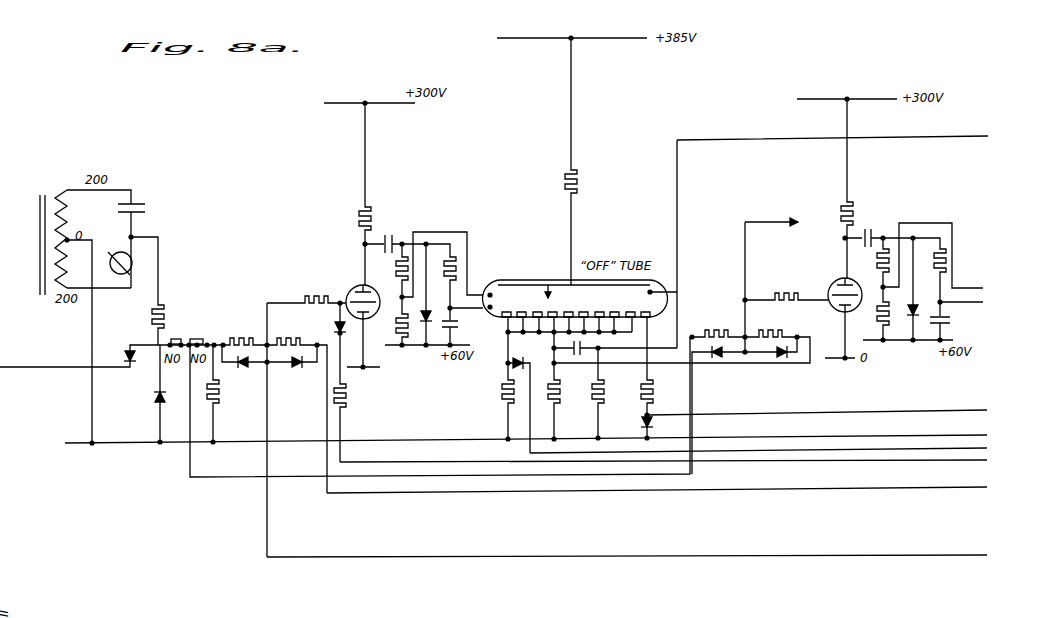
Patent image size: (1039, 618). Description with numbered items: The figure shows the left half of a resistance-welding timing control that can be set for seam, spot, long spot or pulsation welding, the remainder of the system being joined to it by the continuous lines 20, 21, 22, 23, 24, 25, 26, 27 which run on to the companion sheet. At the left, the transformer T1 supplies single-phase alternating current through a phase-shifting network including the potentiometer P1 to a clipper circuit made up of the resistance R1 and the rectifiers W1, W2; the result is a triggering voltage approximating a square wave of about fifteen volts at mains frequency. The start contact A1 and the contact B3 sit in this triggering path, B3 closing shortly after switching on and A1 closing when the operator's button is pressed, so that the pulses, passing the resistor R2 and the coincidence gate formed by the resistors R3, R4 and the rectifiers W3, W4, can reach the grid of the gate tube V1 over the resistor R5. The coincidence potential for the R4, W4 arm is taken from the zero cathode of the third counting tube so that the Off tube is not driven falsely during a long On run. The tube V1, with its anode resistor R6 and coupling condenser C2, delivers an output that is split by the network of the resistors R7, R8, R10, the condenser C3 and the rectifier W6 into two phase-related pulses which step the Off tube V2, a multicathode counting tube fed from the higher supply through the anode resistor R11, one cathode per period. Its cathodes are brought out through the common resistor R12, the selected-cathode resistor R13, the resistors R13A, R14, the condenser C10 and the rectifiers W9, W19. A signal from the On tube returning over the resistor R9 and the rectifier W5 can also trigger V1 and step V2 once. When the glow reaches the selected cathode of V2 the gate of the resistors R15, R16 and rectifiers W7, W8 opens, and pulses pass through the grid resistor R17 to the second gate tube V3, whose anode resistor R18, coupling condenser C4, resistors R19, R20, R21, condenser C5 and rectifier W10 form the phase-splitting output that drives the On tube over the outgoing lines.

The transformer T1 is at (89, 234).
The phase-shifting potentiometer P1 is at (118, 253).
The clipper resistance R1 is at (150, 322).
The resistor R2 is at (221, 394).
The resistor R3 is at (248, 330).
The coincidence circuit resistor R4 is at (290, 338).
The resistor R5 is at (312, 296).
The anode resistor R6 is at (374, 222).
The resistor R7 is at (396, 272).
The resistor R8 is at (396, 329).
The resistor R9 is at (348, 398).
The resistor R10 is at (458, 266).
The anode resistor R11 is at (578, 184).
The common cathode resistor R12 is at (500, 392).
The selected cathode resistor R13 is at (561, 392).
The cathode resistor R13A is at (604, 386).
The cathode resistor R14 is at (653, 386).
The gate resistor R15 is at (718, 327).
The gate resistor R16 is at (770, 327).
The grid resistor R17 is at (782, 292).
The anode resistor R18 is at (856, 210).
The resistor R19 is at (876, 262).
The resistor R20 is at (876, 318).
The resistor R21 is at (948, 264).
The coupling condenser C2 is at (393, 239).
The condenser C3 is at (459, 326).
The coupling condenser C4 is at (868, 232).
The condenser C5 is at (951, 320).
The condenser C10 is at (574, 358).
The clipper rectifier W1 is at (124, 350).
The clipper rectifier W2 is at (152, 398).
The coincidence rectifier W3 is at (244, 368).
The coincidence rectifier W4 is at (296, 368).
The rectifier W5 is at (334, 328).
The rectifier W6 is at (428, 310).
The gate rectifier W7 is at (718, 360).
The gate rectifier W8 is at (782, 360).
The rectifier W9 is at (641, 420).
The rectifier W10 is at (912, 312).
The rectifier W19 is at (518, 358).
The gate tube V1 is at (357, 284).
The Off tube V2 is at (545, 273).
The gate tube V3 is at (840, 282).
The contact B3 is at (175, 338).
The start contact A1 is at (196, 338).
The line 20 is at (943, 259).
The line 21 is at (971, 302).
The line 22 is at (826, 411).
The line 23 is at (535, 436).
The line 24 is at (767, 449).
The line 25 is at (672, 462).
The line 26 is at (666, 488).
The line 27 is at (636, 555).